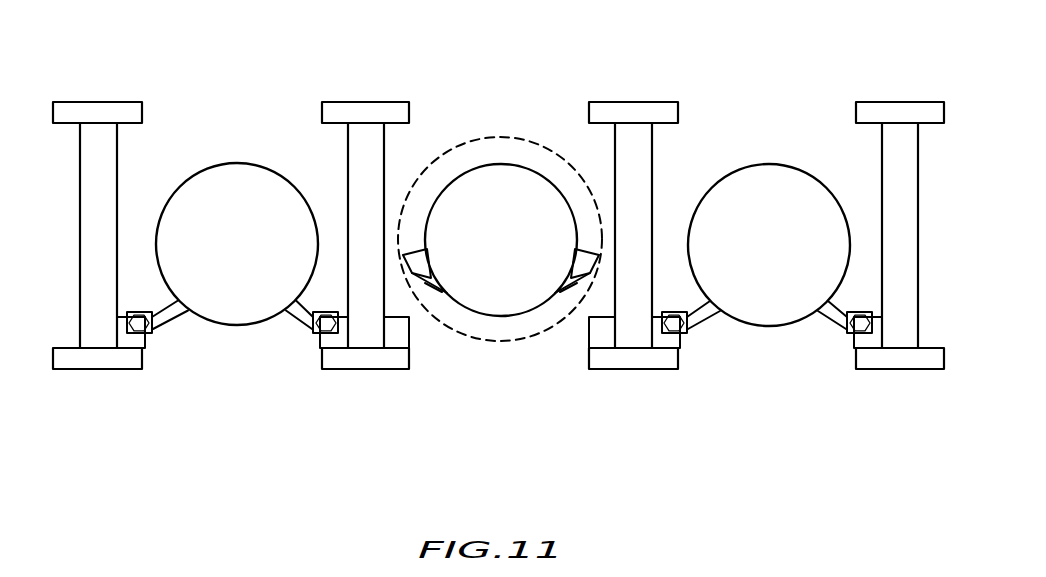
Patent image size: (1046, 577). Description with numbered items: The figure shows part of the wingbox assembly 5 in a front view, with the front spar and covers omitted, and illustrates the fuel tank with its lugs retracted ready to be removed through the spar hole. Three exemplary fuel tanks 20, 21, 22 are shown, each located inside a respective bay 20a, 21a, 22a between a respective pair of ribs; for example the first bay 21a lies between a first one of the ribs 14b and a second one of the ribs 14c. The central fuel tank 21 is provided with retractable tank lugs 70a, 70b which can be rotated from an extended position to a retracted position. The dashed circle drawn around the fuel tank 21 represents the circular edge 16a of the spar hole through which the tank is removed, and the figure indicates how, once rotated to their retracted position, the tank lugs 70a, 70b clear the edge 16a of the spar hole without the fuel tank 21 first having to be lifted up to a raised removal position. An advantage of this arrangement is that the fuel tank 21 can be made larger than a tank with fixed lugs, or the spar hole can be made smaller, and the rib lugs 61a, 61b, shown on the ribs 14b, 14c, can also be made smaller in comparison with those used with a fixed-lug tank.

The wingbox assembly 5 is at (222, 403).
The rib 14b is at (360, 86).
The rib 14c is at (613, 87).
The circular edge of spar hole 16a is at (400, 223).
The fuel tank 20 is at (215, 178).
The bay 20a is at (232, 197).
The fuel tank 21 is at (490, 183).
The bay 21a is at (500, 256).
The fuel tank 22 is at (796, 197).
The bay 22a is at (767, 227).
The rib lug 61a is at (400, 332).
The rib lug 61b is at (603, 337).
The retractable tank lug 70a is at (425, 265).
The retractable tank lug 70b is at (583, 268).